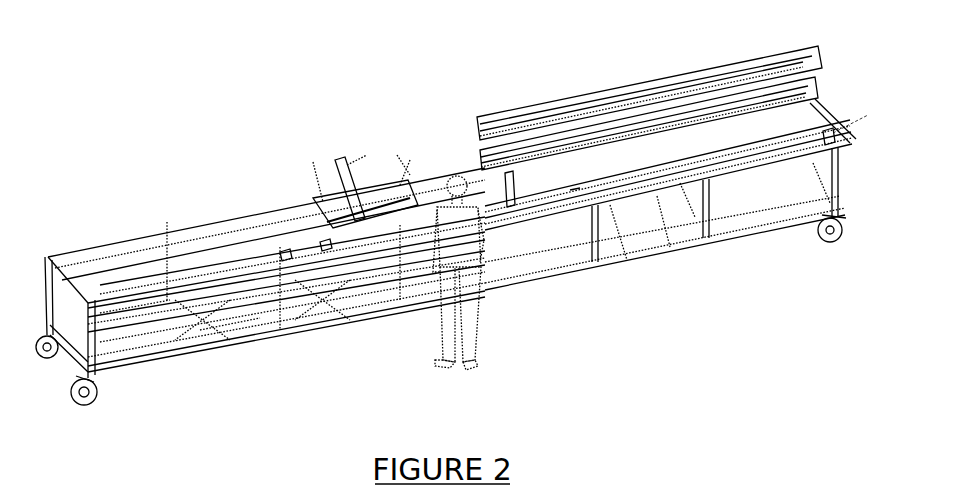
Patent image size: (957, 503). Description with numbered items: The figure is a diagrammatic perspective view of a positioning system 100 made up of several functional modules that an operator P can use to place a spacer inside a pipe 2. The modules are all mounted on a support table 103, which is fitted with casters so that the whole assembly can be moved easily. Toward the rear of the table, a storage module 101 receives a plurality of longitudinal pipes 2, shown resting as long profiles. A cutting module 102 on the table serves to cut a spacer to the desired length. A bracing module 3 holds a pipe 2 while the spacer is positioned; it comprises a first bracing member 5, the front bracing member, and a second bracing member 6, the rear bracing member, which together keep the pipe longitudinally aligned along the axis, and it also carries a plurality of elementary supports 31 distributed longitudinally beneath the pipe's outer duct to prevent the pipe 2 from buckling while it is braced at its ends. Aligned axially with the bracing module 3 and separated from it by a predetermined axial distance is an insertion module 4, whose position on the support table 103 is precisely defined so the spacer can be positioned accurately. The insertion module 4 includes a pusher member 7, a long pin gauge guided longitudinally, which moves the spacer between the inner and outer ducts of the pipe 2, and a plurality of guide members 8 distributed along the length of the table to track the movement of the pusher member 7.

The positioning system 100 is at (455, 214).
The storage module 101 is at (675, 172).
The cutting module 102 is at (369, 176).
The support table 103 is at (260, 252).
The pipe 2 is at (609, 124).
The bracing module 3 is at (755, 186).
The insertion module 4 is at (236, 290).
The first bracing member 5 is at (510, 206).
The second bracing member 6 is at (829, 140).
The pusher member 7 is at (162, 283).
The guide members 8 is at (284, 262).
The elementary supports 31 is at (573, 192).
The operator P is at (464, 264).